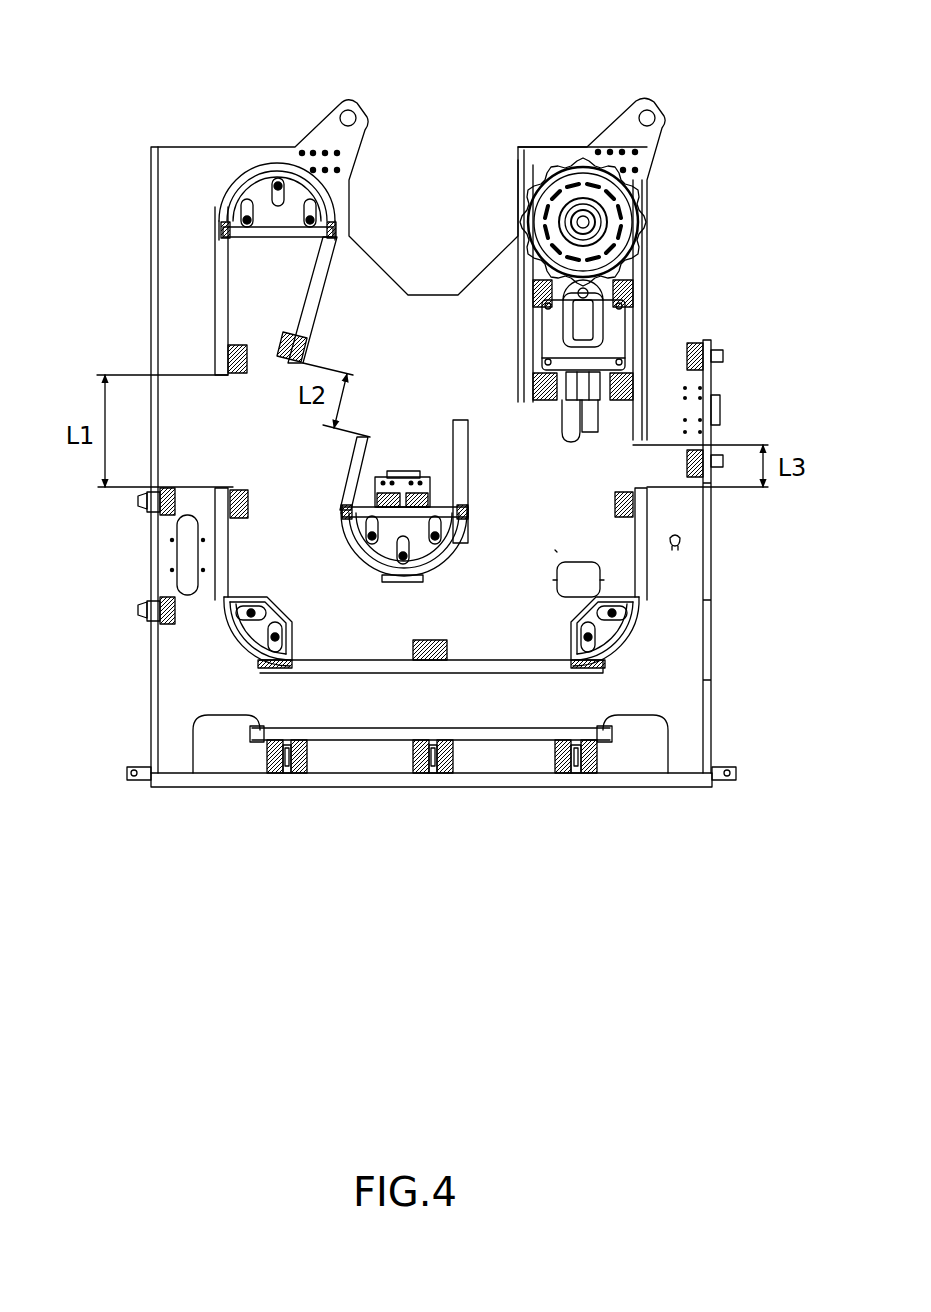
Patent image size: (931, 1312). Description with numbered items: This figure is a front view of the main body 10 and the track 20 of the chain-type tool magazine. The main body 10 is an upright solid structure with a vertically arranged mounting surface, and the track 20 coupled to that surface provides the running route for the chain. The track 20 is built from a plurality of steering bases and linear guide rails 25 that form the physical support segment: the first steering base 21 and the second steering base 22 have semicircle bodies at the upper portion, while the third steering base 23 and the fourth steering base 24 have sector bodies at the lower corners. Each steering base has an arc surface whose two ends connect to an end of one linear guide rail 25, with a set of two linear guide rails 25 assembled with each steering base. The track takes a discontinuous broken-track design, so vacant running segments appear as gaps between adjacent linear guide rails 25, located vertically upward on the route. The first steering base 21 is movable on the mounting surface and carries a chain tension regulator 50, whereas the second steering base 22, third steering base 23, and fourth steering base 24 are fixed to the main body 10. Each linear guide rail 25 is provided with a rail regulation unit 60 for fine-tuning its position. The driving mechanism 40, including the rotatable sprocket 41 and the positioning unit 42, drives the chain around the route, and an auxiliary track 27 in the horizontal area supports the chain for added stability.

The main body 10 is at (275, 147).
The track 20 is at (223, 187).
The first steering base 21 is at (423, 553).
The second steering base 22 is at (258, 190).
The third steering base 23 is at (228, 645).
The fourth steering base 24 is at (607, 637).
The linear guide rail 25 is at (327, 280).
The auxiliary track 27 is at (383, 733).
The driving mechanism 40 is at (650, 203).
The rotatable sprocket 41 is at (582, 190).
The positioning unit 42 is at (620, 328).
The chain tension regulator 50 is at (402, 460).
The rail regulation unit 60 is at (287, 347).